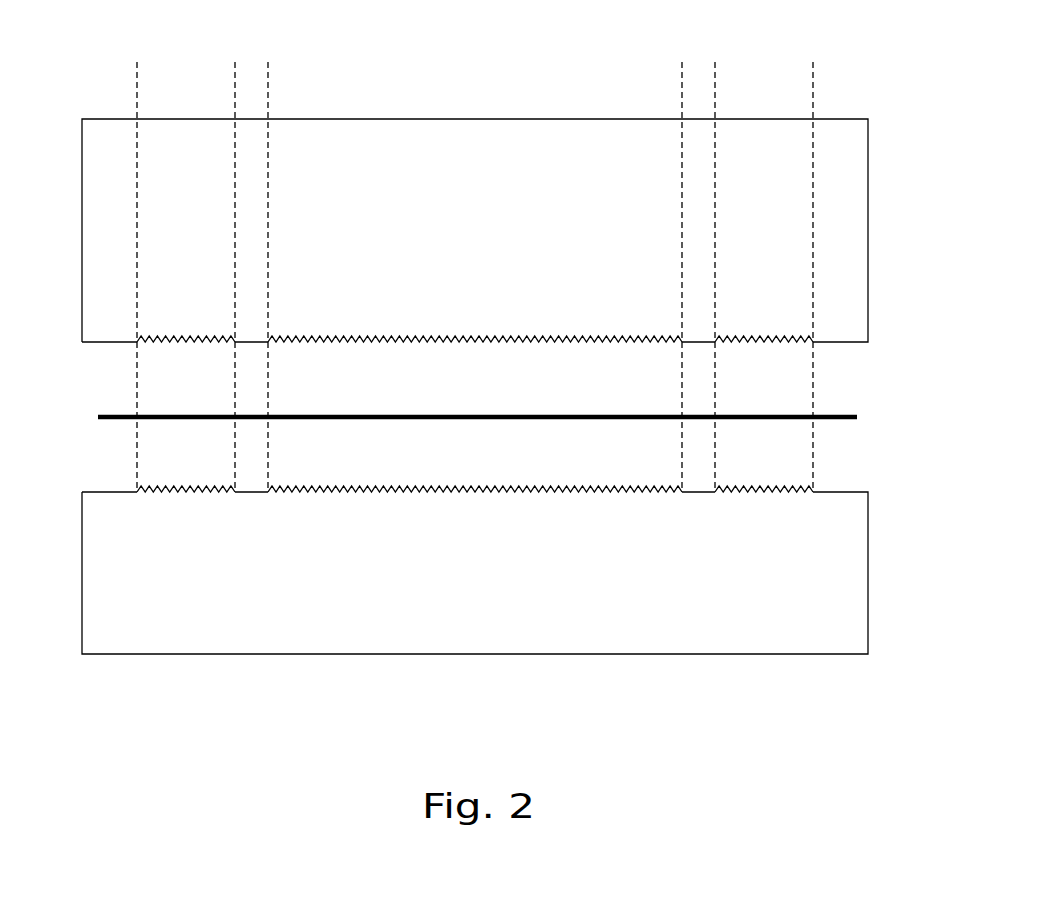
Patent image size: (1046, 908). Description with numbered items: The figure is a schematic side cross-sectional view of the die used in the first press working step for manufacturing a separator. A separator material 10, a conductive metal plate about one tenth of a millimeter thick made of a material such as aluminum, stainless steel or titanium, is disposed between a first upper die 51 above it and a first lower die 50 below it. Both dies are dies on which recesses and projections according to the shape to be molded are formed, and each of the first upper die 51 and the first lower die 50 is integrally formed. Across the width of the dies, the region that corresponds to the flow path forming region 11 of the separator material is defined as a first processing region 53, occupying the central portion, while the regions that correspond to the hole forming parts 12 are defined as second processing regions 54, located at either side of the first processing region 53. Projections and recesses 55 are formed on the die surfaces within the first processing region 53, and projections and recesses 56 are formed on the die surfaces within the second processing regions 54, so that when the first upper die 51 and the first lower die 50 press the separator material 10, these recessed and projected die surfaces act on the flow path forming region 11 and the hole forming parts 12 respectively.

The separator material 10 is at (850, 414).
The flow path forming region 11 is at (410, 413).
The hole forming parts 12 is at (183, 420).
The first lower die 50 is at (857, 590).
The first upper die 51 is at (862, 210).
The first processing region 53 is at (682, 62).
The second processing regions 54 is at (137, 62).
The projections and recesses 55 is at (555, 345).
The projections and recesses 56 is at (155, 345).